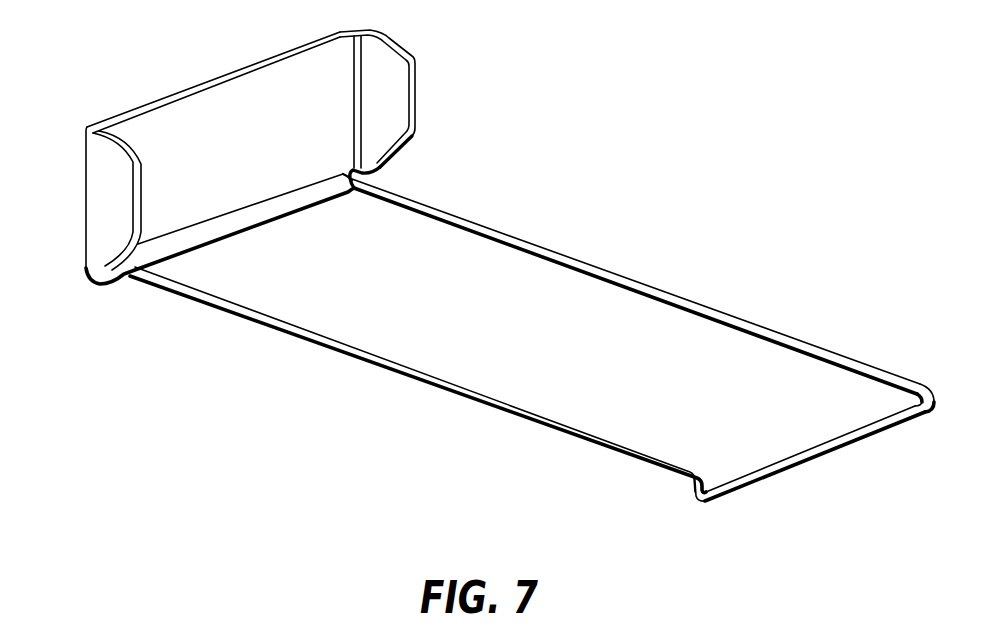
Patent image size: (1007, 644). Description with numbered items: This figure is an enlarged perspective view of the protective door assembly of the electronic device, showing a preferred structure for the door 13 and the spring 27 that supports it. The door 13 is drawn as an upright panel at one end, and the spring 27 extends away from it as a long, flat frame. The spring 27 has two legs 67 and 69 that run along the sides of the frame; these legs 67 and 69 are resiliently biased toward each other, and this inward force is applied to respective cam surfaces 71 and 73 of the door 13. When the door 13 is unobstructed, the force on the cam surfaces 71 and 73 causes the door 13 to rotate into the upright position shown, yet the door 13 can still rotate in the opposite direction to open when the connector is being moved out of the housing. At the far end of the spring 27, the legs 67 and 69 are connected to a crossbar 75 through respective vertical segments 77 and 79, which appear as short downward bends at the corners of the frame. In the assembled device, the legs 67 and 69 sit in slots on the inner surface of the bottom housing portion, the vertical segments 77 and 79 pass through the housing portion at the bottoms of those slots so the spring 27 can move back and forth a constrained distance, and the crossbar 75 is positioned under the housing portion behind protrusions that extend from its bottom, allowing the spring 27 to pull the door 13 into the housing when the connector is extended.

The door 13 is at (250, 158).
The spring 27 is at (532, 350).
The leg 67 is at (303, 330).
The leg 69 is at (494, 229).
The cam surface 71 is at (143, 256).
The cam surface 73 is at (346, 167).
The crossbar 75 is at (812, 456).
The vertical segment 77 is at (692, 485).
The vertical segment 79 is at (923, 405).